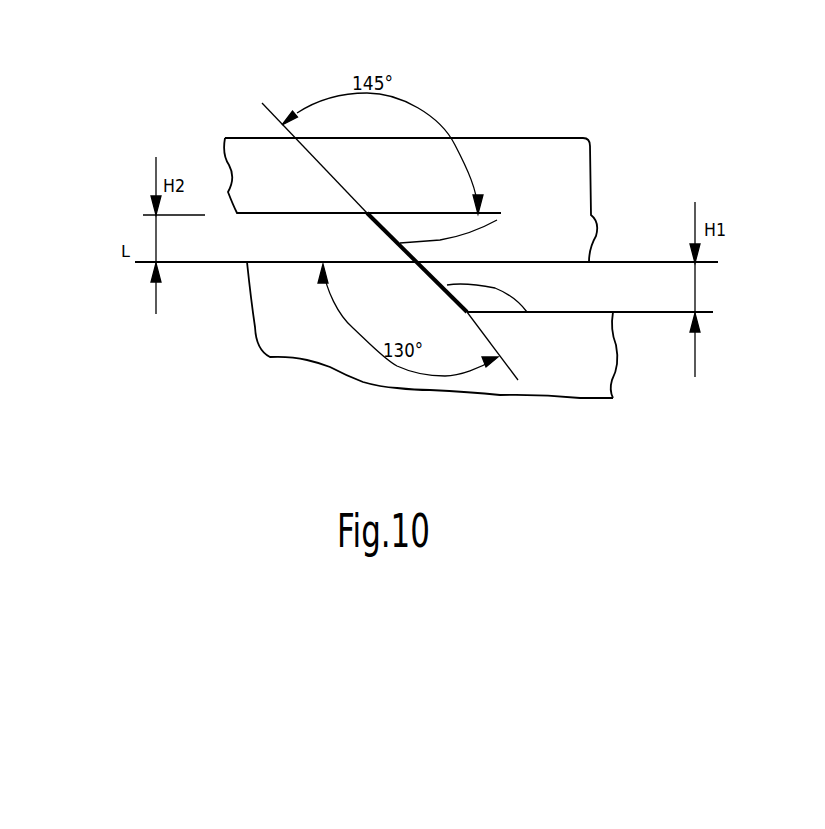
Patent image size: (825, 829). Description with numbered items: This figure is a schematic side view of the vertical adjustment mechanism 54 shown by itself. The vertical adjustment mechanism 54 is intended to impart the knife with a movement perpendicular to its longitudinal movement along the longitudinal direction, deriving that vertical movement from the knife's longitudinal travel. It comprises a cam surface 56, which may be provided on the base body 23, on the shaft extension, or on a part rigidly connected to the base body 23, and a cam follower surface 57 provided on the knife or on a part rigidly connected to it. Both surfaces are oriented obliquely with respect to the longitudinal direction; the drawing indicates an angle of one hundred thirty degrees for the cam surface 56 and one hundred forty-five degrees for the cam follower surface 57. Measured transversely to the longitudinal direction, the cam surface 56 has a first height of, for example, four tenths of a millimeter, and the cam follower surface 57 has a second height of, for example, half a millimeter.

The vertical adjustment mechanism 54 is at (307, 387).
The base body 23 is at (582, 360).
The cam surface 56 is at (527, 312).
The cam follower surface 57 is at (497, 220).